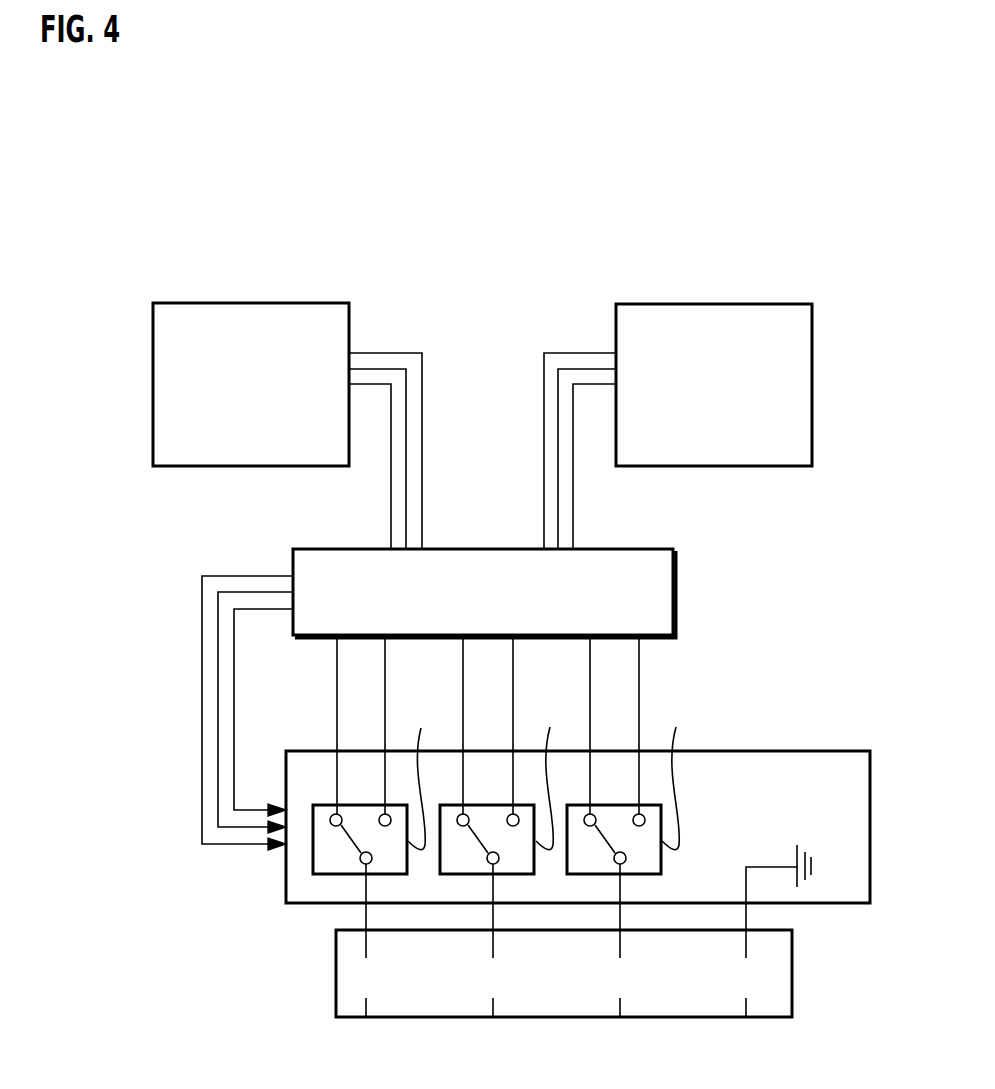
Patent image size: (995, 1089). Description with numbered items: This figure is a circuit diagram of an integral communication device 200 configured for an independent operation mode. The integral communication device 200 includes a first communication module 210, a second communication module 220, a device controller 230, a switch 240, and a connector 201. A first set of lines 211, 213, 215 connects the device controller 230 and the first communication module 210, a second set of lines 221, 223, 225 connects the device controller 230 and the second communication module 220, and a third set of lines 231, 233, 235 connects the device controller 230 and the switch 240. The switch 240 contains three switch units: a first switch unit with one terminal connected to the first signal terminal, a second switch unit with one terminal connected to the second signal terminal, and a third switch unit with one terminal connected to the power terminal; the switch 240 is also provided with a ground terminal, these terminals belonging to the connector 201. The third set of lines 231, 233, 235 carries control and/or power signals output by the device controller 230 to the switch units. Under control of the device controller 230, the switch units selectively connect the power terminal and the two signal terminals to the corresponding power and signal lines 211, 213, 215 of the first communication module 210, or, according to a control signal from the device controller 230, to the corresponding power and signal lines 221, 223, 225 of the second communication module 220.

The integral communication device 200 is at (500, 246).
The connector 201 is at (728, 1018).
The first communication module 210 is at (222, 303).
The first set of lines (line) 211 is at (391, 523).
The first set of lines (line) 213 is at (407, 484).
The first set of lines (line) 215 is at (408, 353).
The second communication module 220 is at (683, 304).
The second set of lines (line) 221 is at (573, 444).
The second set of lines (line) 223 is at (558, 407).
The second set of lines (line) 225 is at (563, 353).
The device controller 230 is at (623, 549).
The third set of lines (line) 231 is at (202, 757).
The third set of lines (line) 233 is at (218, 708).
The third set of lines (line) 235 is at (234, 662).
The switch 240 is at (806, 751).